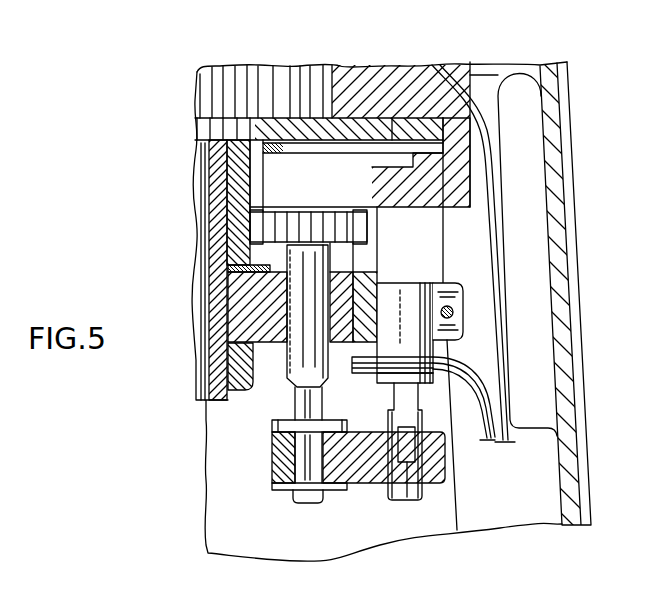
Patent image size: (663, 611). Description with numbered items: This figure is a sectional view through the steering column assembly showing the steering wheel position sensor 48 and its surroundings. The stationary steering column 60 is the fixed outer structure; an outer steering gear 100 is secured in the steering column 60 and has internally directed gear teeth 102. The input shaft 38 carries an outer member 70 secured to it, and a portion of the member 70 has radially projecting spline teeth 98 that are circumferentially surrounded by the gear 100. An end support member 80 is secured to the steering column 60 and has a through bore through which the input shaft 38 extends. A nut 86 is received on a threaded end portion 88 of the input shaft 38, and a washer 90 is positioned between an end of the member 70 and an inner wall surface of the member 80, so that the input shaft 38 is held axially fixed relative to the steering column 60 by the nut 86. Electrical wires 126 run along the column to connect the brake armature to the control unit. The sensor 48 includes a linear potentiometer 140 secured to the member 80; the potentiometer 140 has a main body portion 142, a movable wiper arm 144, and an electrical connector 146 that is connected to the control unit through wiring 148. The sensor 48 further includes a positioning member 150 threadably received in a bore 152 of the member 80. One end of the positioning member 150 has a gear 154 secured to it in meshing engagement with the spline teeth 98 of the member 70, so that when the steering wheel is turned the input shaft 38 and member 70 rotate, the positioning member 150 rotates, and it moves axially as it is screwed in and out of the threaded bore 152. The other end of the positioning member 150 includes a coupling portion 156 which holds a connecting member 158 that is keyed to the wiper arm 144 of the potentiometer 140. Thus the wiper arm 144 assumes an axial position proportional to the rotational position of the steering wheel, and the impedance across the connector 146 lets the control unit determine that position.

The input shaft 38 is at (228, 268).
The steering wheel position sensor 48 is at (382, 518).
The stationary steering column 60 is at (552, 138).
The outer member 70 is at (233, 174).
The end support member 80 is at (253, 294).
The nut 86 is at (240, 358).
The threaded end portion 88 is at (223, 378).
The washer 90 is at (238, 258).
The spline teeth 98 is at (258, 182).
The outer steering gear 100 is at (378, 76).
The gear teeth 102 is at (275, 76).
The electrical wires 126 is at (495, 240).
The linear potentiometer 140 is at (438, 283).
The main body portion 142 is at (413, 345).
The movable wiper arm 144 is at (413, 490).
The electrical connector 146 is at (368, 375).
The wiring 148 is at (493, 388).
The positioning member 150 is at (300, 372).
The bore 152 is at (333, 262).
The gear 154 is at (308, 224).
The coupling portion 156 is at (290, 470).
The connecting member 158 is at (367, 468).